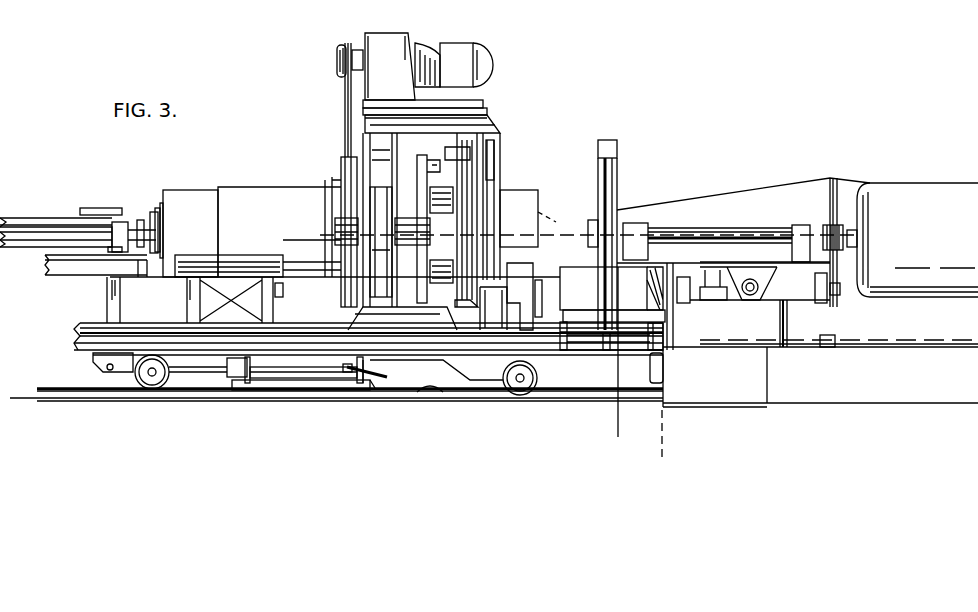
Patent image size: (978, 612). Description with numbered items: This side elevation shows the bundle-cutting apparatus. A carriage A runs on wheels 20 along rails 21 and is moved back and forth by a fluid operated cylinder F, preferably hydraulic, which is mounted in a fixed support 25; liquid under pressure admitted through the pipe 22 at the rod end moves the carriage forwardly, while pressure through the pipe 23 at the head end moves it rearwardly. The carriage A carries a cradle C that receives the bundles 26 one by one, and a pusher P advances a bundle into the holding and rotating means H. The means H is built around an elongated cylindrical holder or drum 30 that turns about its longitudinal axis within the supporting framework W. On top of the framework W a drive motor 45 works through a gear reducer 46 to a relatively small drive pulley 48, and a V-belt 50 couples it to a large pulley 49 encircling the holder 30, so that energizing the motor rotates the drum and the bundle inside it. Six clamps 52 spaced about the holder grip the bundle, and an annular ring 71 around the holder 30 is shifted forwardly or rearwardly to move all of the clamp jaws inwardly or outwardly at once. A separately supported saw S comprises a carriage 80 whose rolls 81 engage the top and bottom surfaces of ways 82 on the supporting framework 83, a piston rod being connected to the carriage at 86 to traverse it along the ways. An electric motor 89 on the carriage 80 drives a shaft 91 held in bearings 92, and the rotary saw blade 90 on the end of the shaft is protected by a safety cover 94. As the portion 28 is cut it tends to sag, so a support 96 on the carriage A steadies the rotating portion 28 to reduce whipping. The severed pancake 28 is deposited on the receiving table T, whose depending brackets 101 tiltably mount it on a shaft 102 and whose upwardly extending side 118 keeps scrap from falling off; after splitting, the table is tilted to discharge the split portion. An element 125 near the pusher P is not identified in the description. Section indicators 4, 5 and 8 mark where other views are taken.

The section line 4- 4 is at (636, 443).
The section line 5- 5 is at (622, 283).
The section line 8- 8 is at (302, 226).
The wheels 20 is at (165, 390).
The rails 21 is at (425, 392).
The pipe 22 is at (258, 380).
The pipe 23 is at (383, 375).
The fixed support 25 is at (372, 390).
The bundles 26 is at (228, 190).
The cut portion or pancake 28 is at (592, 265).
The holder or drum 30 is at (502, 192).
The drive motor 45 is at (476, 44).
The gear reducer 46 is at (372, 37).
The drive pulley 48 is at (337, 47).
The large pulley 49 is at (342, 165).
The V-belt 50 is at (344, 100).
The clamps 52 is at (456, 145).
The annular ring 71 is at (420, 160).
The saw carriage 80 is at (805, 181).
The rolls 81 is at (691, 303).
The ways 82 is at (855, 317).
The supporting framework 83 is at (831, 346).
The piston rod connection 86 is at (769, 287).
The electric motor 89 is at (908, 186).
The rotary saw blade 90 is at (598, 185).
The shaft 91 is at (722, 233).
The bearings 92 is at (642, 222).
The safety cover 94 is at (598, 151).
The support 96 is at (525, 282).
The depending brackets 101 is at (563, 352).
The shaft 102 is at (590, 352).
The upwardly extending side 118 is at (548, 292).
The disc 125 is at (155, 213).
The carriage A is at (74, 333).
The cradle C is at (232, 256).
The fluid operated cylinder F is at (300, 385).
The holding and rotating means H is at (505, 166).
The pusher P is at (96, 204).
The saw S is at (621, 176).
The receiving table T is at (661, 330).
The supporting framework W is at (478, 106).